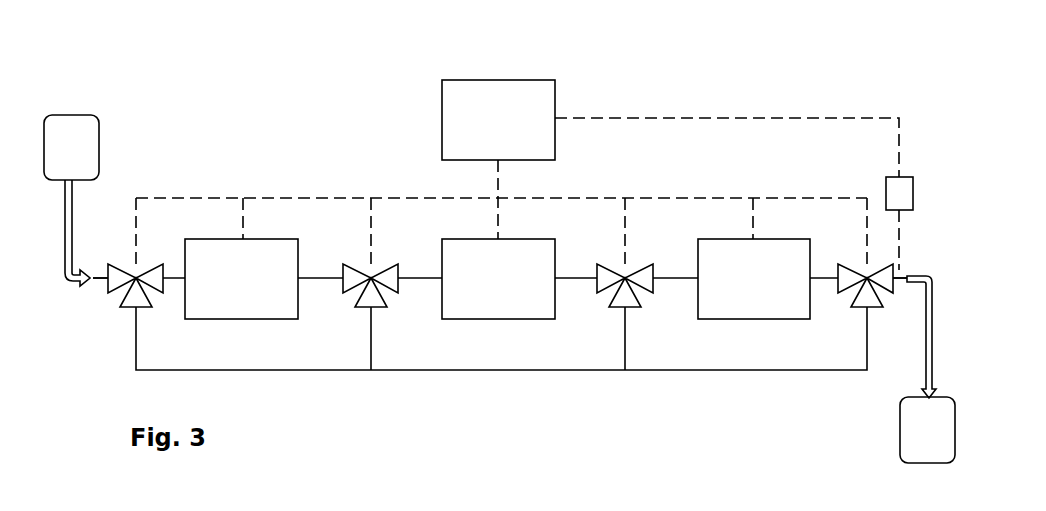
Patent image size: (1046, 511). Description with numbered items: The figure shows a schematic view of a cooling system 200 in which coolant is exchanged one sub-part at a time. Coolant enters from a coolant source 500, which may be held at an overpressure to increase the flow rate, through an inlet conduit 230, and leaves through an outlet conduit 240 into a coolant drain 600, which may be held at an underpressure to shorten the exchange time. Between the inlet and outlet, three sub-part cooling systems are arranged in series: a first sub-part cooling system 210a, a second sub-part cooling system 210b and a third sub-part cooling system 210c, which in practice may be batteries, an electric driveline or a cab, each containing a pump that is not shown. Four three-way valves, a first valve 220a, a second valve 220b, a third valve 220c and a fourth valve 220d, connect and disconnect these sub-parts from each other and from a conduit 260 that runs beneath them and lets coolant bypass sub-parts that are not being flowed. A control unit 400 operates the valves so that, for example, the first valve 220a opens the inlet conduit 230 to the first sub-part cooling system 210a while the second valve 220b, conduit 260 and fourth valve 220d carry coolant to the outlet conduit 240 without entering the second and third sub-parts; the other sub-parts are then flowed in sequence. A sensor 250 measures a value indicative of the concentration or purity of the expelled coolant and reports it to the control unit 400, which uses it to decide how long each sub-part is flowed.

The cooling system 200 is at (520, 29).
The first sub-part cooling system 210a is at (241, 279).
The second sub-part cooling system 210b is at (498, 279).
The third sub-part cooling system 210c is at (754, 279).
The first valve 220a is at (141, 266).
The second valve 220b is at (368, 263).
The third valve 220c is at (614, 266).
The fourth valve 220d is at (855, 290).
The inlet conduit 230 is at (100, 282).
The outlet conduit 240 is at (900, 283).
The sensor 250 is at (886, 195).
The conduit 260 is at (503, 370).
The control unit 400 is at (517, 175).
The coolant source 500 is at (71, 200).
The coolant drain 600 is at (927, 369).